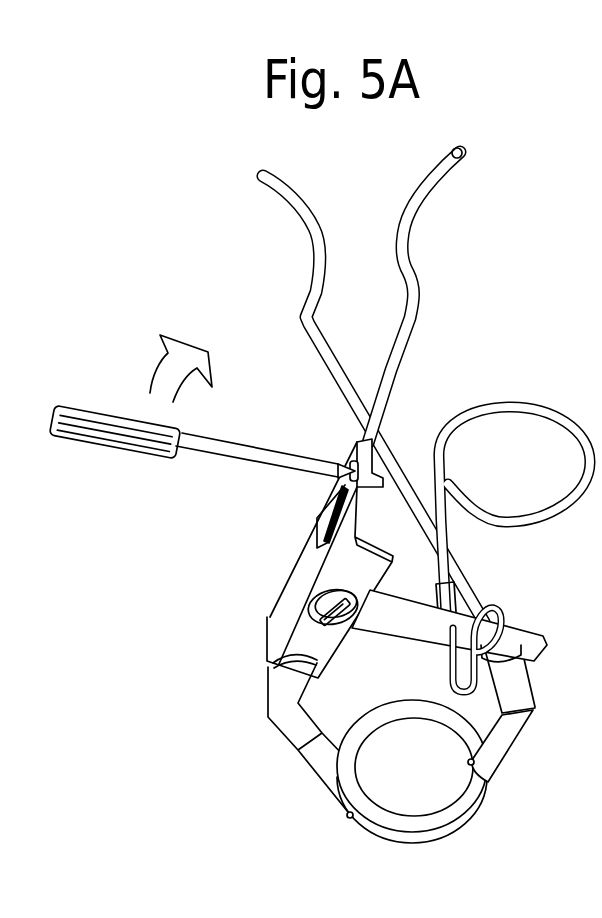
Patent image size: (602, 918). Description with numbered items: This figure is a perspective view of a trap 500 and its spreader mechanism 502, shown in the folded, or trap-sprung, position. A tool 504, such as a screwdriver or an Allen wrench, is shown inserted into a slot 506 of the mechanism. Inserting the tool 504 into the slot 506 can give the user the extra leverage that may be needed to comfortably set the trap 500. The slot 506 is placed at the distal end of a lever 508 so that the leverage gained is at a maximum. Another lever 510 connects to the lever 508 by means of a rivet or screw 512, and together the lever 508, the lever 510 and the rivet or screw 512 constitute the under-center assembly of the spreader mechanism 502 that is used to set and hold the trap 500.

The trap 500 is at (200, 203).
The spreader mechanism 502 is at (262, 580).
The tool 504 is at (120, 452).
The slot 506 is at (352, 461).
The lever 508 is at (362, 581).
The lever 510 is at (410, 633).
The rivet or screw 512 is at (343, 618).